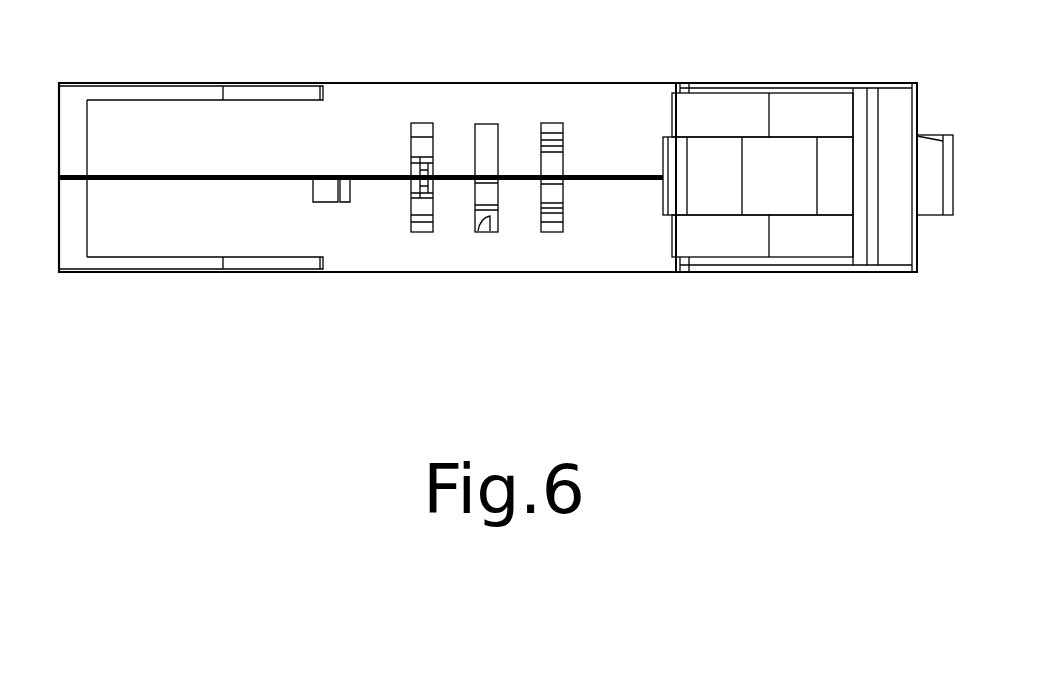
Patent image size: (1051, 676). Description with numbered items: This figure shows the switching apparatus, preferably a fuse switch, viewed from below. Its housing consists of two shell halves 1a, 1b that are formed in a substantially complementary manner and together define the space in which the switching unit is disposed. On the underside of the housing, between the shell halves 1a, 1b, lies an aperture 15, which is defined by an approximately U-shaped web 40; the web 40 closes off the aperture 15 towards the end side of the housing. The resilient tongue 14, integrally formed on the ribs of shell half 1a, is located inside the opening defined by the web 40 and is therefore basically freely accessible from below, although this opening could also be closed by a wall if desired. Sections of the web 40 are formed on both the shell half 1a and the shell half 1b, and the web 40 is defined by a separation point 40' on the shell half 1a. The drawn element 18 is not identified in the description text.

The shell half 1a is at (622, 272).
The shell half 1b is at (615, 82).
The tongue 14 is at (764, 188).
The aperture 15 is at (720, 115).
The coupling 18 is at (933, 172).
The U-shaped web 40 is at (796, 142).
The separation point 40' is at (862, 216).